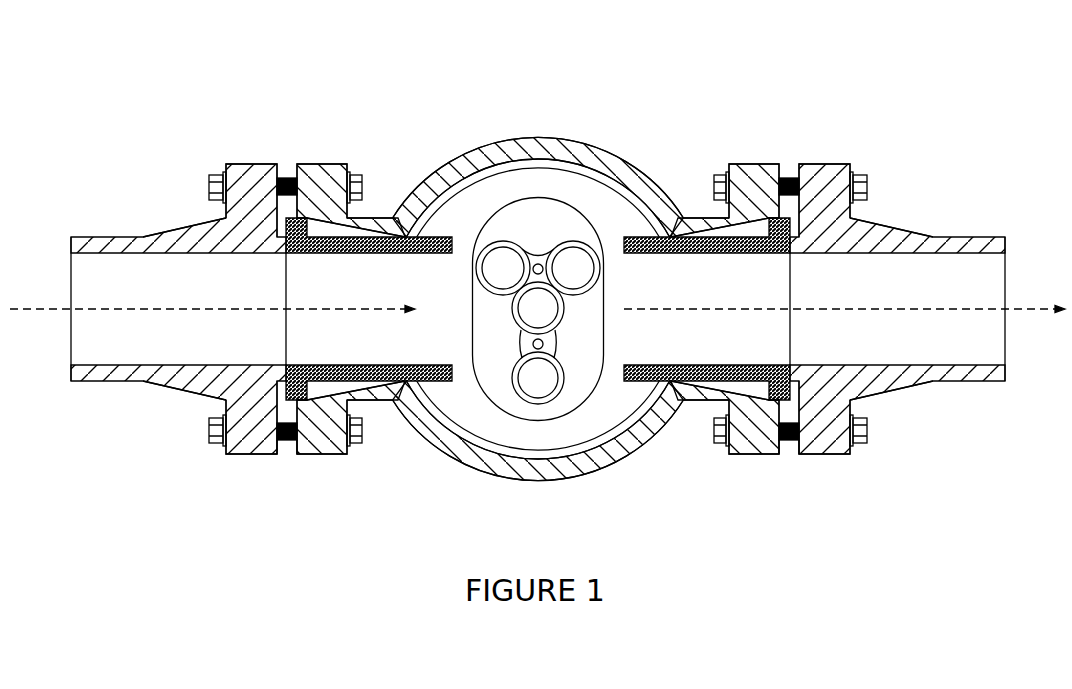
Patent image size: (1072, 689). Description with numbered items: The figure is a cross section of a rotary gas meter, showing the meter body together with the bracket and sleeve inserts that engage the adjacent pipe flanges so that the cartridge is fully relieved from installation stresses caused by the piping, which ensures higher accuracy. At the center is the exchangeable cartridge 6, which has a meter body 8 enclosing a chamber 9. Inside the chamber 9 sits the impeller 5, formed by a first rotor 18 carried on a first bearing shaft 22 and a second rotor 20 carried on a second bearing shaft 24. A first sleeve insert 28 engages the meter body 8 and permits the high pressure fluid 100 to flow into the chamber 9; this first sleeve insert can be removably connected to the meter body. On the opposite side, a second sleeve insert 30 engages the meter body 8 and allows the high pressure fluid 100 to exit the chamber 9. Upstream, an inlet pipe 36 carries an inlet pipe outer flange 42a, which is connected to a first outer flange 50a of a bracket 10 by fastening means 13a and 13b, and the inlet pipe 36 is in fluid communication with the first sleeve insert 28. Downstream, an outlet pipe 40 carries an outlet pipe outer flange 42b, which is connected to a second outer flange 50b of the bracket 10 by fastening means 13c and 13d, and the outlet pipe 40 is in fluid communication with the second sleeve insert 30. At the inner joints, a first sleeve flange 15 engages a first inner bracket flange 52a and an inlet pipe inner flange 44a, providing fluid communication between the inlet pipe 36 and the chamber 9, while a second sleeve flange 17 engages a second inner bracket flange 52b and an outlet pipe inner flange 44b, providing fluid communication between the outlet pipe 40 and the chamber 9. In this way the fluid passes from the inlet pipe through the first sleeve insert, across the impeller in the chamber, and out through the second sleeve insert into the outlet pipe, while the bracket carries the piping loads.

The impeller 5 is at (521, 305).
The exchangeable cartridge 6 is at (537, 265).
The meter body 8 is at (611, 215).
The chamber 9 is at (557, 200).
The bracket 10 is at (542, 322).
The fastening means 13a is at (362, 187).
The fastening means 13b is at (358, 432).
The fastening means 13c is at (716, 187).
The fastening means 13d is at (718, 432).
The first sleeve flange 15 is at (292, 455).
The second sleeve flange 17 is at (784, 455).
The first rotor 18 is at (502, 243).
The second rotor 20 is at (515, 383).
The first bearing shaft 22 is at (536, 264).
The second bearing shaft 24 is at (533, 348).
The first sleeve insert 28 is at (362, 365).
The second sleeve insert 30 is at (722, 365).
The inlet pipe 36 is at (178, 284).
The outlet pipe 40 is at (897, 284).
The inlet pipe outer flange 42a is at (246, 164).
The outlet pipe outer flange 42b is at (830, 164).
The inlet pipe inner flange 44a is at (284, 381).
The outlet pipe inner flange 44b is at (793, 235).
The first outer flange 50a is at (317, 164).
The second outer flange 50b is at (759, 164).
The first inner bracket flange 52a is at (310, 392).
The second inner bracket flange 52b is at (766, 392).
The high pressure fluid 100 is at (210, 306).